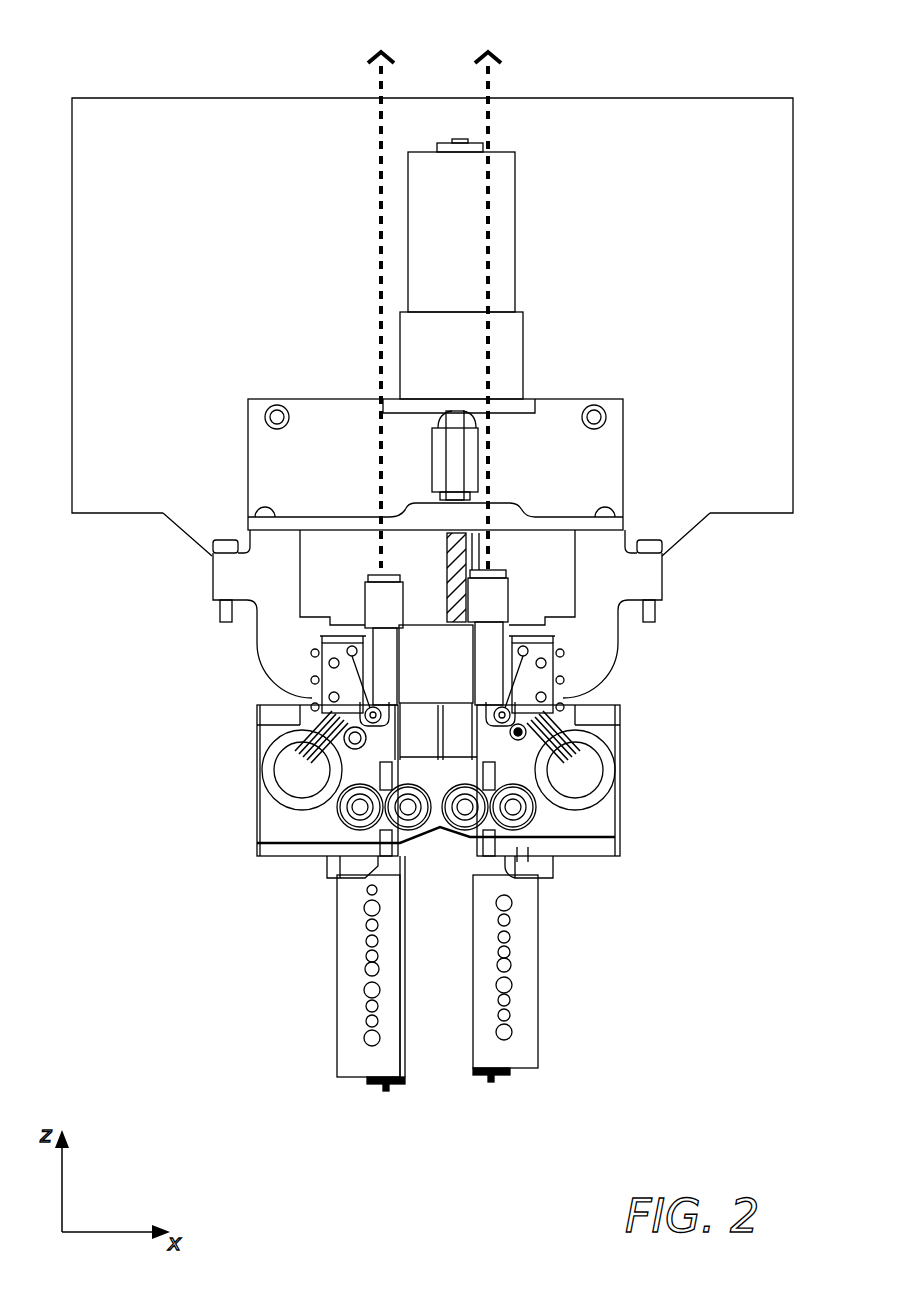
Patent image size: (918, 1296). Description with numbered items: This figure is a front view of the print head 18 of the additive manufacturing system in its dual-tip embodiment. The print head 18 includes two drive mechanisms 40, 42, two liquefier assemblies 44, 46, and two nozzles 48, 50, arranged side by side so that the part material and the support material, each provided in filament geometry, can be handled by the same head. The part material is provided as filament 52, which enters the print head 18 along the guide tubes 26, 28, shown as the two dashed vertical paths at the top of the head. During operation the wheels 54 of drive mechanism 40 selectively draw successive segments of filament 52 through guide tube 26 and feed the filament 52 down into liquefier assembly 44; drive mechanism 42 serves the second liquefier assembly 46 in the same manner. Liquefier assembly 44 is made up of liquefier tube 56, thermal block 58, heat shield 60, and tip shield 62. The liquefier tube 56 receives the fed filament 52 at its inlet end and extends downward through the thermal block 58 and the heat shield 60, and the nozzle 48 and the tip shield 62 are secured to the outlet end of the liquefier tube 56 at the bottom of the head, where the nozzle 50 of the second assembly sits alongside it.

The print head 18 is at (534, 64).
The guide tube 26 is at (381, 248).
The guide tube 28 is at (488, 248).
The drive mechanism 40 is at (240, 790).
The drive mechanism 42 is at (635, 780).
The liquefier assembly 44 is at (328, 944).
The liquefier assembly 46 is at (546, 944).
The nozzle 48 is at (384, 1096).
The nozzle 50 is at (491, 1088).
The filament 52 is at (396, 848).
The wheels 54 is at (338, 824).
The liquefier tube 56 is at (360, 852).
The thermal block 58 is at (395, 953).
The heat shield 60 is at (265, 842).
The tip shield 62 is at (402, 1084).